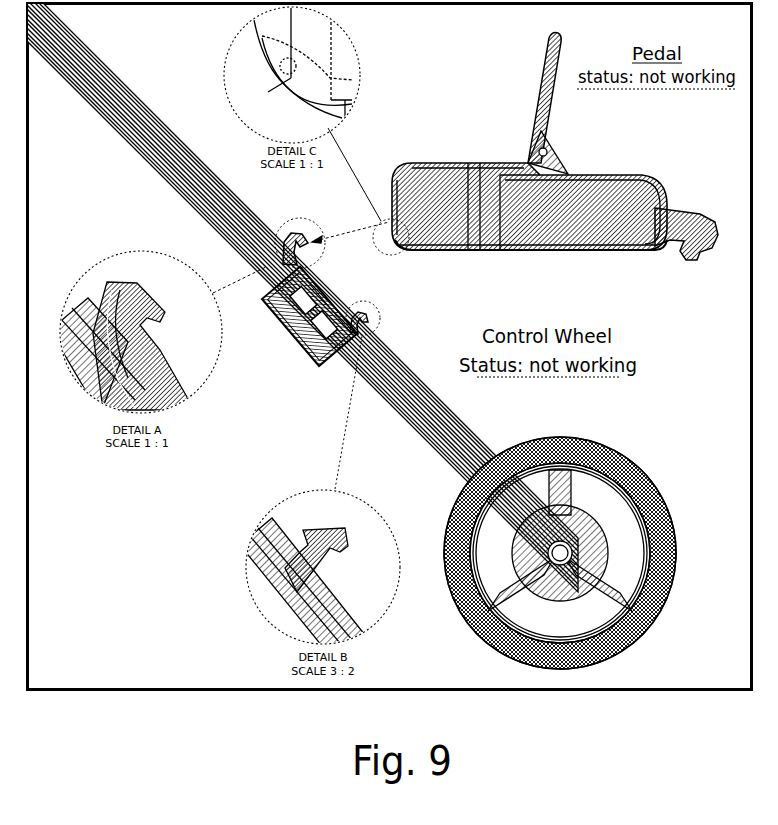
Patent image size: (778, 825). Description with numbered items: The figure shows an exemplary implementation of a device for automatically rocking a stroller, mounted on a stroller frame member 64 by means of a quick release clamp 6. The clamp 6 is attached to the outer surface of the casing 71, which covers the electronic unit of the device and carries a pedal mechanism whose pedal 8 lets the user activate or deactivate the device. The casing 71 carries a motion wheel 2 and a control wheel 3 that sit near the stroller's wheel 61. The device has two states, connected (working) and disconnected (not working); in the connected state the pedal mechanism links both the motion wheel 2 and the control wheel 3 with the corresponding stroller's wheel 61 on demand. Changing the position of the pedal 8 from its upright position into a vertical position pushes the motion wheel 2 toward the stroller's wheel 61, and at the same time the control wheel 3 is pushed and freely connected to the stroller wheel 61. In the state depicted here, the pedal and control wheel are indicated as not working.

The stroller frame member 64 is at (137, 148).
The quick release clamp 6 is at (303, 348).
The motion wheel 2 is at (555, 190).
The casing 71 is at (460, 247).
The control wheel 3 is at (690, 253).
The pedal 8 is at (552, 72).
The stroller's wheel 61 is at (647, 473).